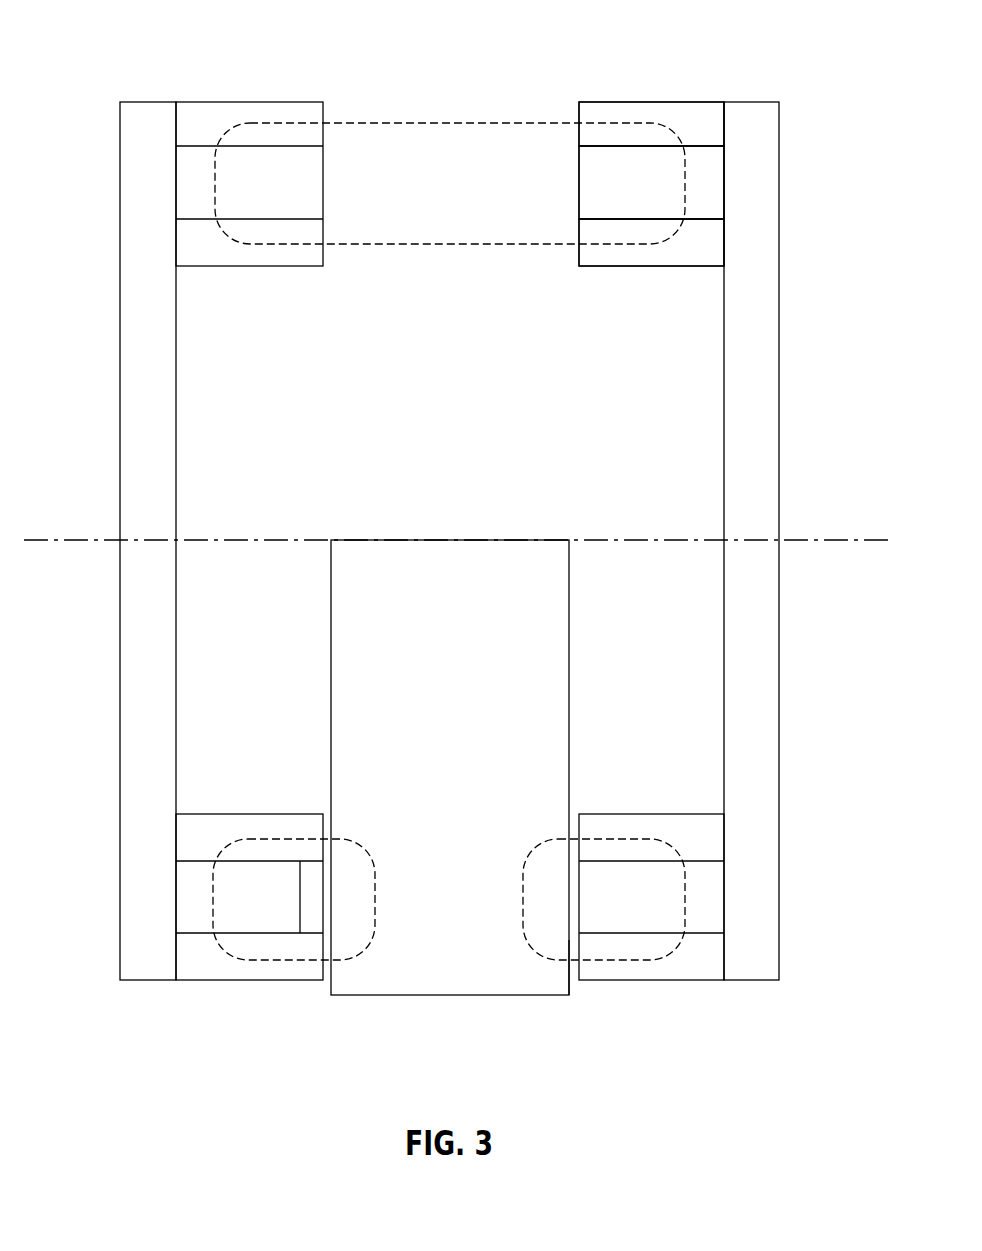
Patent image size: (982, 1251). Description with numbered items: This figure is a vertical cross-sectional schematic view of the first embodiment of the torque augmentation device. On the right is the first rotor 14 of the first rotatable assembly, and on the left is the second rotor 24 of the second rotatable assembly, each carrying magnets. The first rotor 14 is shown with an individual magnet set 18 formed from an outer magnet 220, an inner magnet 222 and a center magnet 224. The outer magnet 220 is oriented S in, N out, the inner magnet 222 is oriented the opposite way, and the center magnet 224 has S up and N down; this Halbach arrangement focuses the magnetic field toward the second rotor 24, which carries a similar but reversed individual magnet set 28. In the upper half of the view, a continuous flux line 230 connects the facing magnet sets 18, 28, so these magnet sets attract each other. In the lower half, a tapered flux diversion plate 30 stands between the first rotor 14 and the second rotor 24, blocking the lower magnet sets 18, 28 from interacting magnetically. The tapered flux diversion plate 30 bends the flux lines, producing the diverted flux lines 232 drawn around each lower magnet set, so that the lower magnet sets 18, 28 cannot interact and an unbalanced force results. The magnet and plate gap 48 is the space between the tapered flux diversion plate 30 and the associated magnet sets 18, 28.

The first rotor 14 is at (768, 715).
The individual magnet set 18 is at (631, 80).
The second rotor 24 is at (132, 718).
The individual magnet set 28 is at (257, 80).
The tapered flux diversion plate 30 is at (468, 707).
The magnet and plate gap 48 is at (573, 973).
The outer magnet 220 is at (652, 107).
The inner magnet 222 is at (692, 255).
The center magnet 224 is at (712, 184).
The continuous flux line 230 is at (450, 245).
The diverted flux lines 232 is at (298, 839).